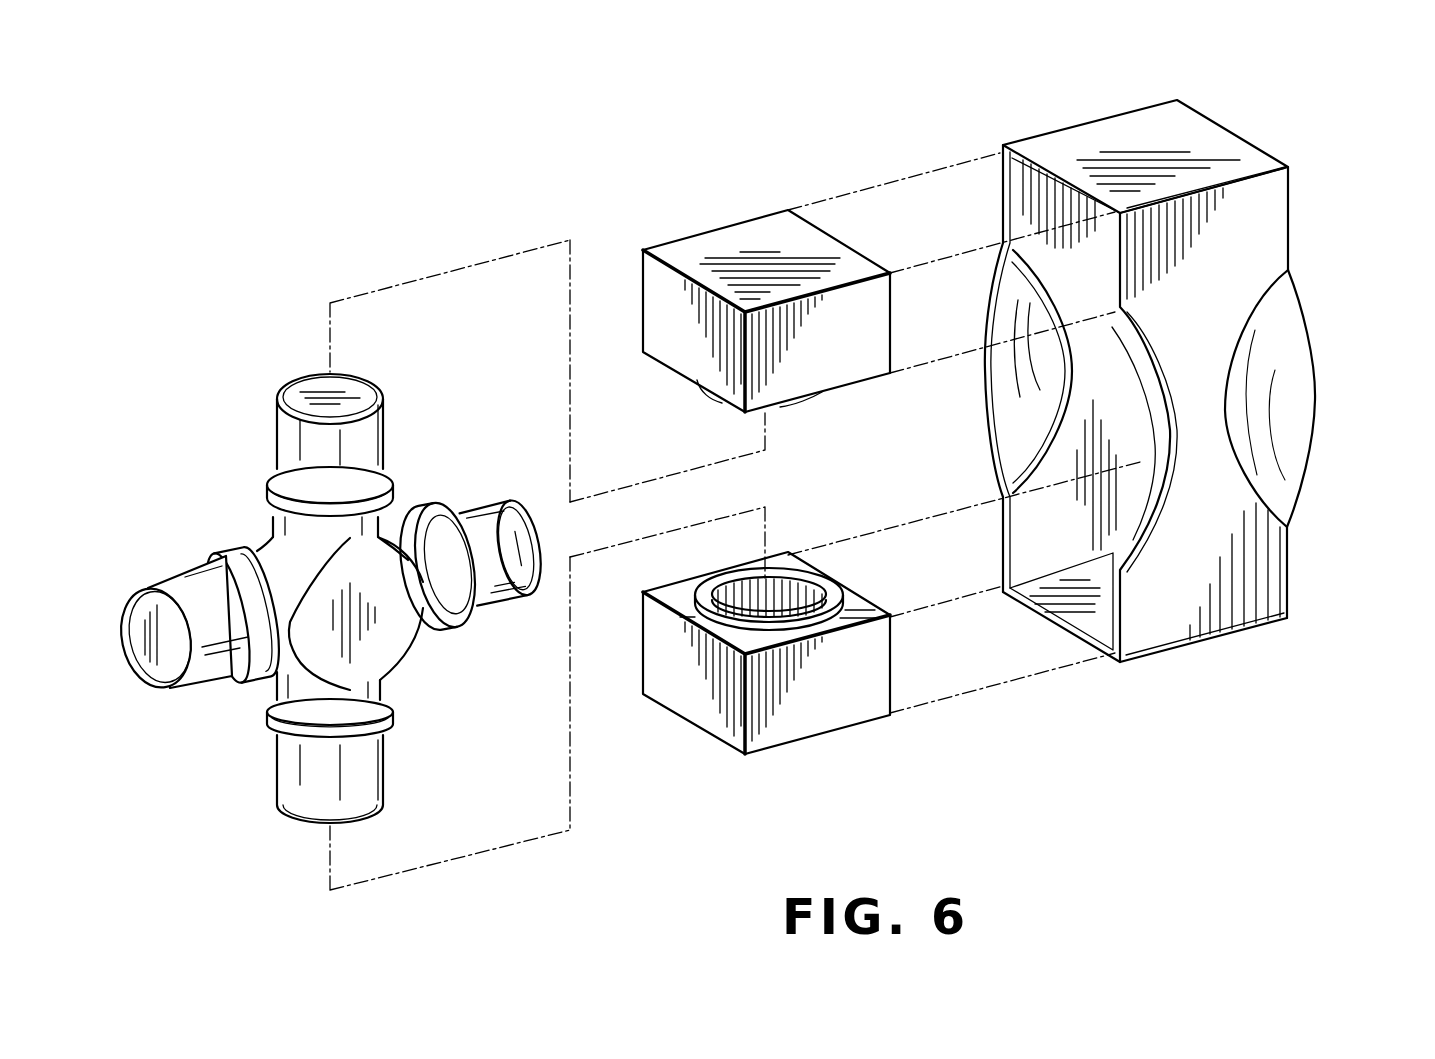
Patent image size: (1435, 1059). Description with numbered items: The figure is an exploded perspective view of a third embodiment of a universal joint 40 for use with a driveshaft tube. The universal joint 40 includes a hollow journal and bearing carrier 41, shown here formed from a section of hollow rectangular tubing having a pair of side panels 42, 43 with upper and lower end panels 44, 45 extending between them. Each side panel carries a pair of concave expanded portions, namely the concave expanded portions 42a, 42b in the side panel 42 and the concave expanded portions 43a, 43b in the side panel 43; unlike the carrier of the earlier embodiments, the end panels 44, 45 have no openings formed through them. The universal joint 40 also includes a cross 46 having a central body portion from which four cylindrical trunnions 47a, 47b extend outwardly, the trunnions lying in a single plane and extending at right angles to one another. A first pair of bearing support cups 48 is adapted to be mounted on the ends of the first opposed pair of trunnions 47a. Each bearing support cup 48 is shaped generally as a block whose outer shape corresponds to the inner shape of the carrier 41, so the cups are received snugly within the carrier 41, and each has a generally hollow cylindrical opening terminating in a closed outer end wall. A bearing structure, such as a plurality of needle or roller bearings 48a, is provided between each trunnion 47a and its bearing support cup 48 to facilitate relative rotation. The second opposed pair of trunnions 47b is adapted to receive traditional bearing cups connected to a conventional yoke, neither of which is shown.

The universal joint 40 is at (302, 177).
The journal and bearing carrier 41 is at (1318, 136).
The side panel 42 is at (1262, 206).
The concave expanded portion 42a is at (1171, 447).
The concave expanded portion 42b is at (1298, 375).
The side panel 43 is at (1037, 203).
The concave expanded portion 43a is at (1013, 392).
The concave expanded portion 43b is at (1133, 385).
The upper end panel 44 is at (1117, 156).
The lower end panel 45 is at (1077, 610).
The cross 46 is at (330, 643).
The trunnion 47a is at (297, 447).
The trunnion 47b is at (484, 518).
The bearing support cup 48 is at (697, 256).
The roller bearings 48a is at (782, 595).